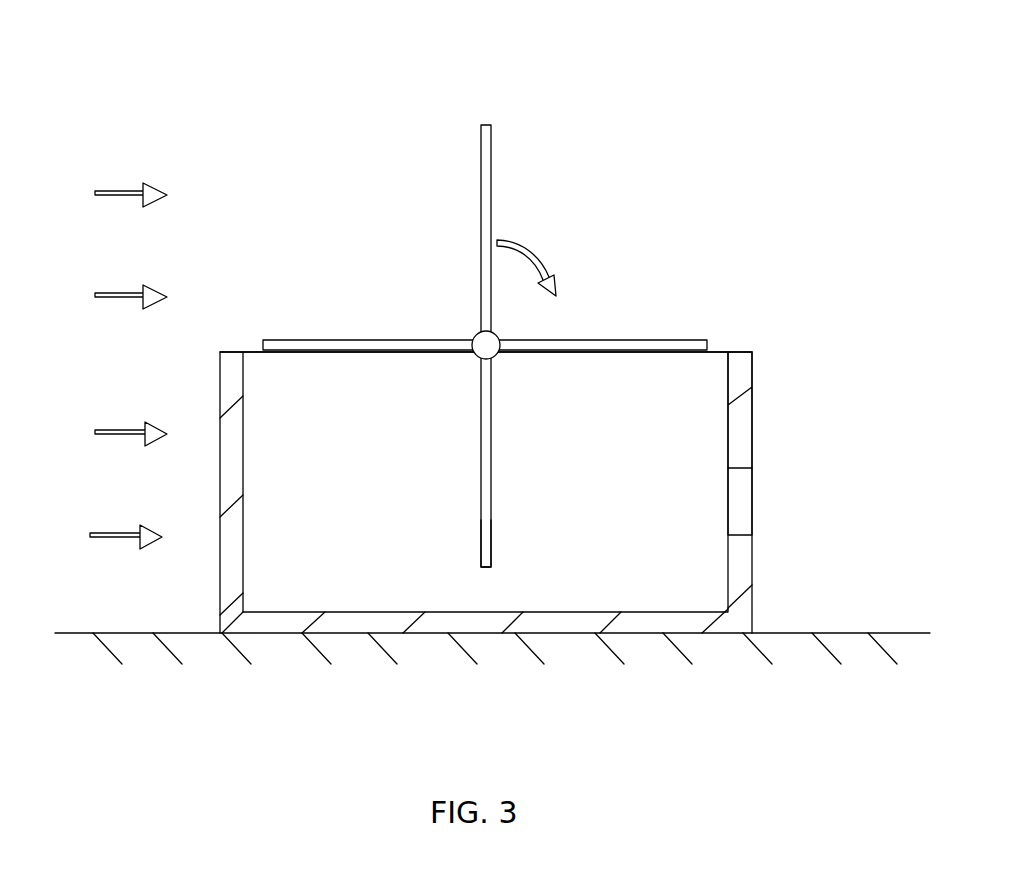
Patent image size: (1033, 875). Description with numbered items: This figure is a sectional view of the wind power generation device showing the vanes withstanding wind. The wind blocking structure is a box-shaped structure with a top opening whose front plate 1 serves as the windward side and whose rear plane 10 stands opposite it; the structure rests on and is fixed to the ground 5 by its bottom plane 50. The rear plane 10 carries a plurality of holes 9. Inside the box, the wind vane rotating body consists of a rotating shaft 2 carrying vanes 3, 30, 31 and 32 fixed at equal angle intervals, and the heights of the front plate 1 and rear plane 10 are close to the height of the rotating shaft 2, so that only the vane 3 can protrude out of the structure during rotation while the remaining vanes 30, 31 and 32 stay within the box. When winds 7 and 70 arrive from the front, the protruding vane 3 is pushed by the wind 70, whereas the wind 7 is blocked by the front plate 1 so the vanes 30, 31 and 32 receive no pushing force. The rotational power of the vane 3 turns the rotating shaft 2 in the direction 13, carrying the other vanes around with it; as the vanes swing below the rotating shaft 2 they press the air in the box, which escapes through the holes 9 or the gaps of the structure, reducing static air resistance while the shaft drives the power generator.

The front plate 1 is at (230, 566).
The rotating shaft 2 is at (472, 333).
The vane 3 is at (489, 126).
The ground 5 is at (868, 633).
The wind 7 is at (95, 430).
The holes 9 is at (740, 508).
The rear plane 10 is at (740, 422).
The direction 13 is at (540, 253).
The vane 30 is at (708, 343).
The vane 31 is at (485, 532).
The vane 32 is at (315, 340).
The bottom plane 50 is at (462, 620).
The wind 70 is at (95, 191).